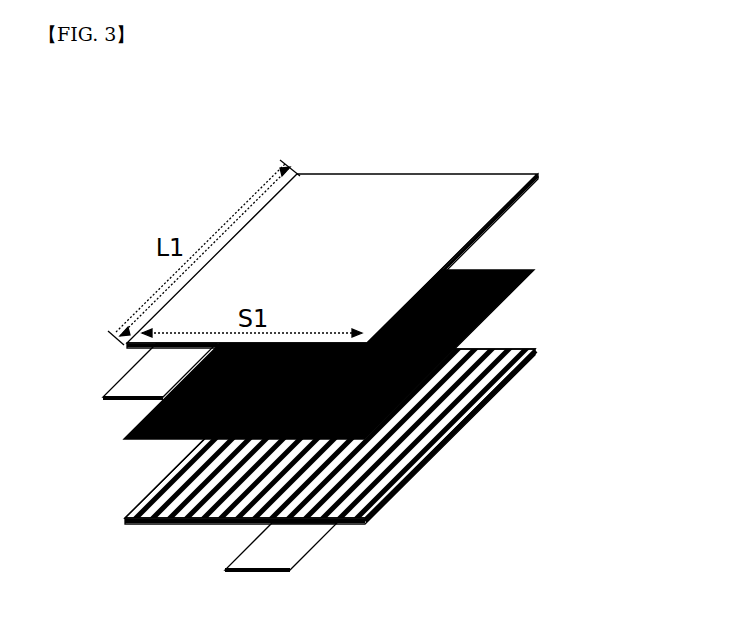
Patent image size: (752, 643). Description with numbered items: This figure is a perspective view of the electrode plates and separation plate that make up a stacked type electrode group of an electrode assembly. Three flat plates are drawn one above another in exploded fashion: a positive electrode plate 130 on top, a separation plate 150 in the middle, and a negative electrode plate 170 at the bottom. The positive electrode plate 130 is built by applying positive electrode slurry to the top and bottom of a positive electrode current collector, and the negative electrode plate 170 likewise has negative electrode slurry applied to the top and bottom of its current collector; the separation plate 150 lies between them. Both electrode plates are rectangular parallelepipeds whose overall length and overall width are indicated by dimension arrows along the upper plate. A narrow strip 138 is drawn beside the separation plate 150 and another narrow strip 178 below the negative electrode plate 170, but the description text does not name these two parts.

The positive electrode plate 130 is at (463, 198).
The light source 138 is at (135, 383).
The separation plate 150 is at (502, 270).
The negative electrode plate 170 is at (513, 347).
The support strip 178 is at (288, 558).